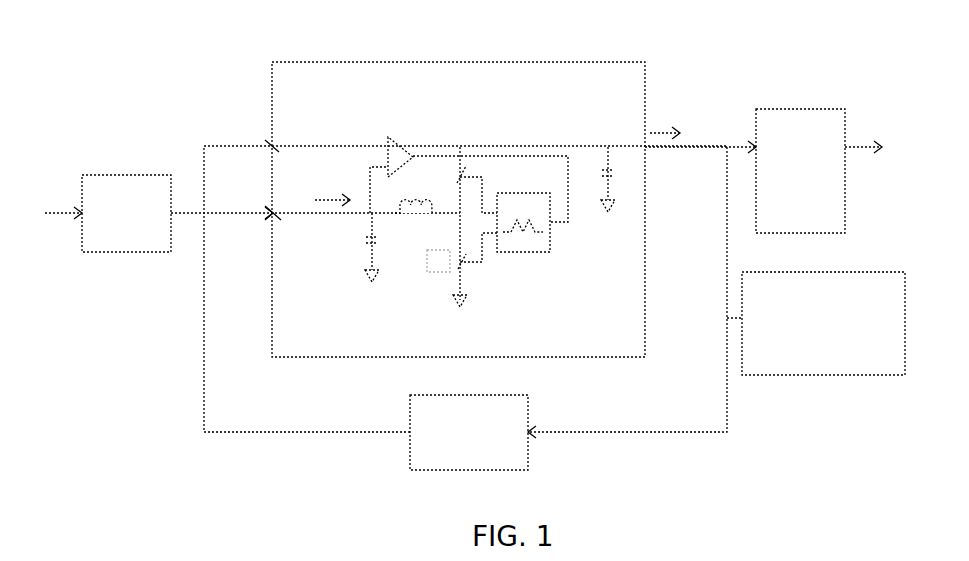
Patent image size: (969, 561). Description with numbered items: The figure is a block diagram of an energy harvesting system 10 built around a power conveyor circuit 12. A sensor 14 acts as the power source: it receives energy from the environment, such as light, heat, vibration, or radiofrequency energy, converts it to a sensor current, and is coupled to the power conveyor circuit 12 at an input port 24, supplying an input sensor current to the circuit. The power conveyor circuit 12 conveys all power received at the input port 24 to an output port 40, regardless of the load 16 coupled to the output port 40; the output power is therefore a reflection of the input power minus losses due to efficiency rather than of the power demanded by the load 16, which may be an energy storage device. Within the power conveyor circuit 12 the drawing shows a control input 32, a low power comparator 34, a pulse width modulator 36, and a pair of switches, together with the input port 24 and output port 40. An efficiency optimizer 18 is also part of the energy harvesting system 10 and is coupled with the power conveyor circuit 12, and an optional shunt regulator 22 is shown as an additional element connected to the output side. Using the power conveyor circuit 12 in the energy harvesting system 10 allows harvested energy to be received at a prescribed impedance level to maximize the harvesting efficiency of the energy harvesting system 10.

The energy harvesting system 10 is at (465, 135).
The power conveyor circuit 12 is at (440, 209).
The sensor 14 is at (126, 213).
The load 16 is at (800, 171).
The efficiency optimizer 18 is at (469, 432).
The shunt regulator 22 is at (823, 323).
The input port 24 is at (276, 211).
The control input 32 is at (270, 138).
The low power comparator 34 is at (386, 130).
The pulse width modulator 36 is at (562, 247).
The output port 40 is at (480, 289).